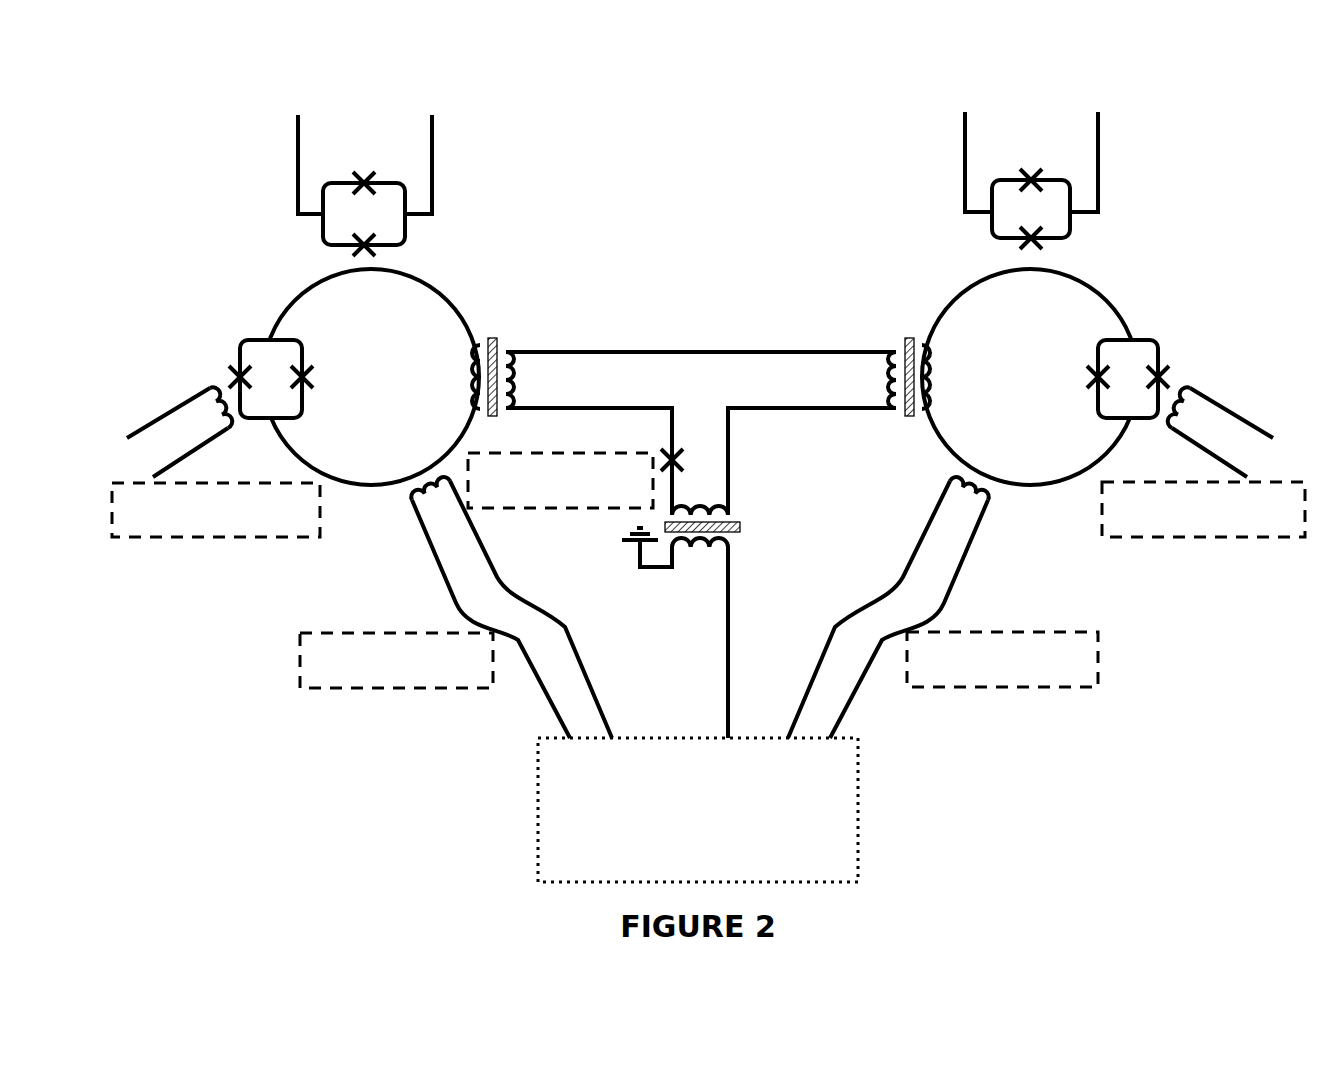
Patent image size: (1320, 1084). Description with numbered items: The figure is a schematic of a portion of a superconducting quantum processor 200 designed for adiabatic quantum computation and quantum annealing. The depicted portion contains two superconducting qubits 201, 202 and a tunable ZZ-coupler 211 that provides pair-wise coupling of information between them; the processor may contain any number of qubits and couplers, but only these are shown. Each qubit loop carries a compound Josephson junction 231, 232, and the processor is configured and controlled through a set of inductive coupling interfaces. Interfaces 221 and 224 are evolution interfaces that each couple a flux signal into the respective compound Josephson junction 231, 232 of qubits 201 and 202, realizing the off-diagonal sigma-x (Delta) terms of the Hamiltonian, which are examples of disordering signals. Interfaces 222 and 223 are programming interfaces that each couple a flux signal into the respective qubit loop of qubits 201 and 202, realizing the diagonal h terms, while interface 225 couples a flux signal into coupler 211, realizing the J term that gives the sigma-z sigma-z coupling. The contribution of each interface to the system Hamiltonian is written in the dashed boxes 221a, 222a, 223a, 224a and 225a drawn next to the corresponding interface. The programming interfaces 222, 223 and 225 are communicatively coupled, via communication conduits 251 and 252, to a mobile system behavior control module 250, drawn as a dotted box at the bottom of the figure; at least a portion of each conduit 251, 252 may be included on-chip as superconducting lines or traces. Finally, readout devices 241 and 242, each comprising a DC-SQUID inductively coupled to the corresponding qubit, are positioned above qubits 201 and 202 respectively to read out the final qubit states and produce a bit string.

The superconducting quantum processor 200 is at (226, 141).
The superconducting qubit 201 is at (312, 316).
The superconducting qubit 202 is at (1103, 316).
The tunable ZZ-coupler 211 is at (708, 354).
The interface 221 is at (205, 385).
The box 221a is at (246, 540).
The interface 222 is at (494, 617).
The box 222a is at (415, 690).
The interface 223 is at (913, 618).
The box 223a is at (970, 690).
The interface 224 is at (1192, 382).
The box 224a is at (1168, 540).
The interface 225 is at (700, 566).
The box 225a is at (600, 510).
The compound Josephson junction 231 is at (306, 378).
The compound Josephson junction 232 is at (1092, 374).
The readout device 241 is at (368, 208).
The readout device 242 is at (1031, 208).
The mobile system behavior control module 250 is at (538, 826).
The communication conduit 251 is at (550, 695).
The communication conduit 252 is at (850, 693).